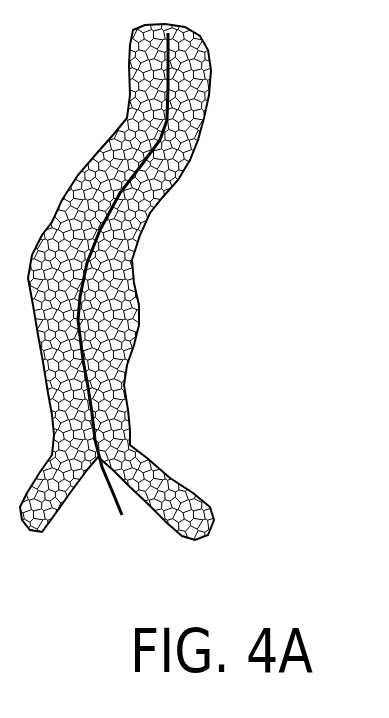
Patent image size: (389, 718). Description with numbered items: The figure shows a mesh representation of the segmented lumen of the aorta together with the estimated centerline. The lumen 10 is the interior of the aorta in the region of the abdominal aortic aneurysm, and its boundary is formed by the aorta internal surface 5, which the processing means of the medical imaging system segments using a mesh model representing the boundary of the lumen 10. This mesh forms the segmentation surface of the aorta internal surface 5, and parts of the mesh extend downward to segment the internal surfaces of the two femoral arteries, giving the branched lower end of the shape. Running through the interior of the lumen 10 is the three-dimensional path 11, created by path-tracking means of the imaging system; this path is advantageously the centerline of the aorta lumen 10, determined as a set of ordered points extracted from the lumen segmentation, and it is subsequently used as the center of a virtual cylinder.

The lumen 10 is at (148, 202).
The 3-D path 11 is at (108, 371).
The aorta internal surface 5 is at (150, 415).